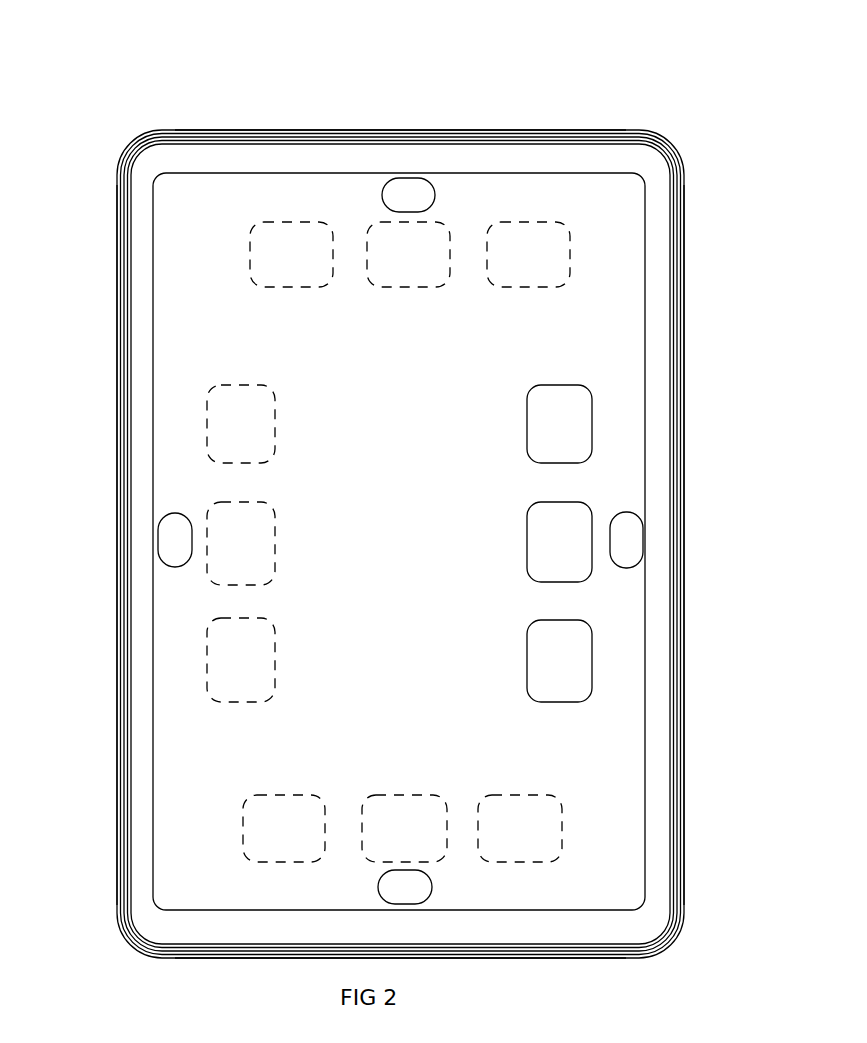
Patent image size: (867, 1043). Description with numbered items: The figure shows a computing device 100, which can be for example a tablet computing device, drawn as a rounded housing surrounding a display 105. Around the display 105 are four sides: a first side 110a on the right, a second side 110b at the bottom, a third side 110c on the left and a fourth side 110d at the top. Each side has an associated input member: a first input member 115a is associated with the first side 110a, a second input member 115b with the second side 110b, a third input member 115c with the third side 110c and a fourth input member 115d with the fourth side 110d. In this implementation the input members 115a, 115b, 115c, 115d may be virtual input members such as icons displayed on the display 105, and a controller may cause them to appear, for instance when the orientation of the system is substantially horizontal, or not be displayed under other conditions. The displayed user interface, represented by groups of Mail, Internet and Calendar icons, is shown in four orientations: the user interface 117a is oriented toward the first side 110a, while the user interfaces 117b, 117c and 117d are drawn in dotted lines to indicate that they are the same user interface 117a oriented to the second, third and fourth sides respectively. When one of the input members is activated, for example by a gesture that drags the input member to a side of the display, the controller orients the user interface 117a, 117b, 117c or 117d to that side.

The computing device 100 is at (475, 89).
The display 105 is at (353, 173).
The first side 110a is at (684, 663).
The second side 110b is at (500, 958).
The third side 110c is at (117, 620).
The fourth side 110d is at (405, 130).
The first input member 115a is at (625, 540).
The second input member 115b is at (405, 888).
The third input member 115c is at (173, 540).
The fourth input member 115d is at (396, 192).
The user interface 117a is at (527, 638).
The user interface 117b is at (290, 795).
The user interface 117c is at (275, 451).
The user interface 117d is at (508, 287).